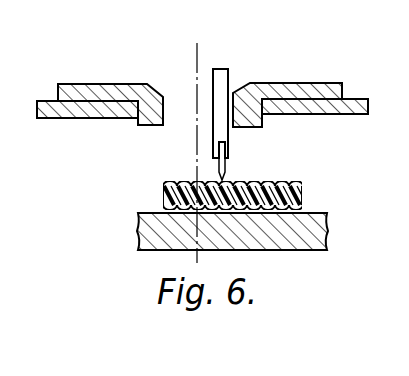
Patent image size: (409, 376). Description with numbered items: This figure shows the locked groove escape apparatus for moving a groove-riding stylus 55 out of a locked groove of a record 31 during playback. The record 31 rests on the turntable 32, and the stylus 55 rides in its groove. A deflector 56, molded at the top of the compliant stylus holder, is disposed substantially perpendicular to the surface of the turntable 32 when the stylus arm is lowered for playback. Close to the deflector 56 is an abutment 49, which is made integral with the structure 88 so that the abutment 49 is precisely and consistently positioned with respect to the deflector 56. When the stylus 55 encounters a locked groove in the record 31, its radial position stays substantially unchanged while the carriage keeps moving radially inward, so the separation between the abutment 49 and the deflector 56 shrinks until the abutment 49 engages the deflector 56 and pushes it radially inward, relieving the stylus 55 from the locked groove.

The record 31 is at (302, 197).
The turntable 32 is at (327, 232).
The abutment 49 is at (283, 83).
The stylus 55 is at (228, 168).
The deflector 56 is at (219, 68).
The structure 88 is at (183, 120).